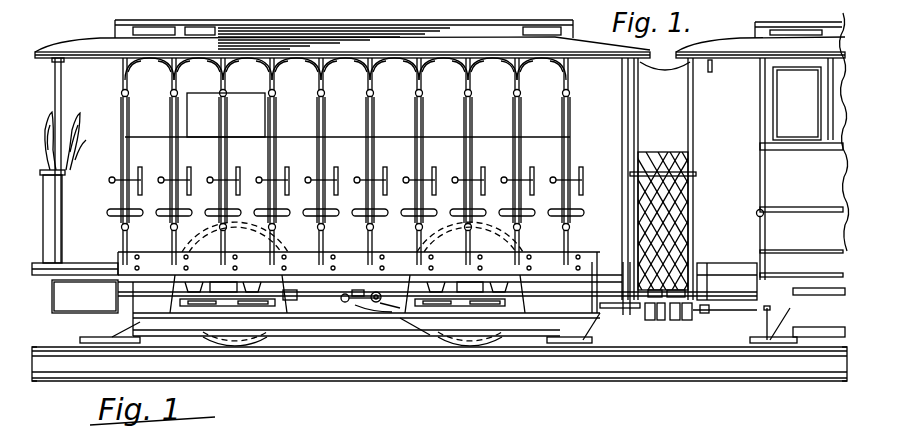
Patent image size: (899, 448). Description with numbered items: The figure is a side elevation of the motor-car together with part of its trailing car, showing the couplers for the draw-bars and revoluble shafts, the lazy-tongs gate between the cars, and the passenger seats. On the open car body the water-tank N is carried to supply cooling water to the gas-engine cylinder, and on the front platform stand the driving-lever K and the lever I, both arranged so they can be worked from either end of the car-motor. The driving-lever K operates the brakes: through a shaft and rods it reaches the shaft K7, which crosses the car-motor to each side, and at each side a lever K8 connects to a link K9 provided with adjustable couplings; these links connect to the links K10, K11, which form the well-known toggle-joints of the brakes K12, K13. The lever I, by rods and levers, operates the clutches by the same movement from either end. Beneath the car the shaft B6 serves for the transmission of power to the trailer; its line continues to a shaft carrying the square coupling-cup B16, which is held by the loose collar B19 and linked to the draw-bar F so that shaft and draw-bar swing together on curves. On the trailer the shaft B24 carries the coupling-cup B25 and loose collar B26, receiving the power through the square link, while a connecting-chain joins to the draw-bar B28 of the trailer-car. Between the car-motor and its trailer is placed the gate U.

The lever I is at (48, 193).
The driving-lever K is at (78, 134).
The water-tank N is at (373, 46).
The gate U is at (646, 164).
The draw-bar F is at (600, 292).
The shaft K7 is at (398, 310).
The lever K8 is at (368, 302).
The link K9 is at (358, 297).
The link K10 is at (386, 310).
The link K11 is at (347, 303).
The brake K12 is at (424, 334).
The brake K13 is at (287, 301).
The shaft B6 is at (633, 313).
The square coupling-cup B16 is at (649, 322).
The loose collar B19 is at (672, 322).
The shaft B24 is at (768, 312).
The coupling-cup B25 is at (690, 325).
The loose collar B26 is at (685, 325).
The draw-bar B28 is at (728, 290).